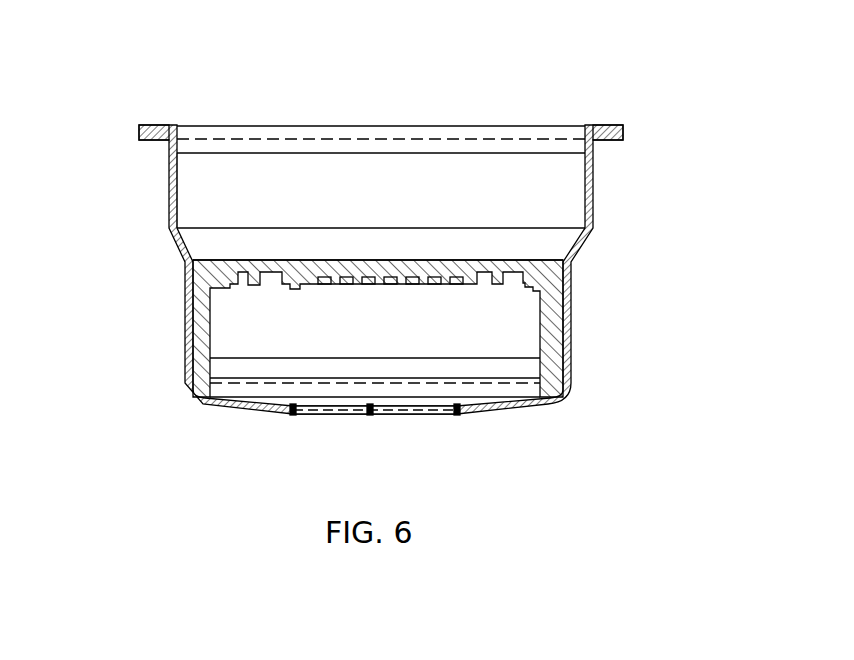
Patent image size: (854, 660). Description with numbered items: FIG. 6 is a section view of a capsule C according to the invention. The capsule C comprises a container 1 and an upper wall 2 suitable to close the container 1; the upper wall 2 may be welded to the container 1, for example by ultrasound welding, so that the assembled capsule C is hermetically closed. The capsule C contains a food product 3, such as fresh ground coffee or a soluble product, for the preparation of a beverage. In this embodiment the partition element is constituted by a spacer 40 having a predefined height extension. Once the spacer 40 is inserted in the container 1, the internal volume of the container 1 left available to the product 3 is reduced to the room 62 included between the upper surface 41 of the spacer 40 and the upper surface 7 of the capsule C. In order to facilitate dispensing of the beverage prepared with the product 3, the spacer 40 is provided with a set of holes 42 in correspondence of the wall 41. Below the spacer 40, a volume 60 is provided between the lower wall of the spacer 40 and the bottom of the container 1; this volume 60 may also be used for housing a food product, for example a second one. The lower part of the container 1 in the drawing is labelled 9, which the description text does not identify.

The container 1 is at (384, 229).
The upper wall 2 is at (580, 127).
The food product 3 is at (551, 210).
The upper surface of the capsule 7 is at (500, 140).
The filter / outlet wall 9 is at (416, 414).
The spacer 40 is at (375, 370).
The upper surface of the spacer 41 is at (523, 257).
The set of holes 42 is at (317, 283).
The volume 60 is at (505, 337).
The room 62 is at (381, 190).
The capsule C is at (618, 370).